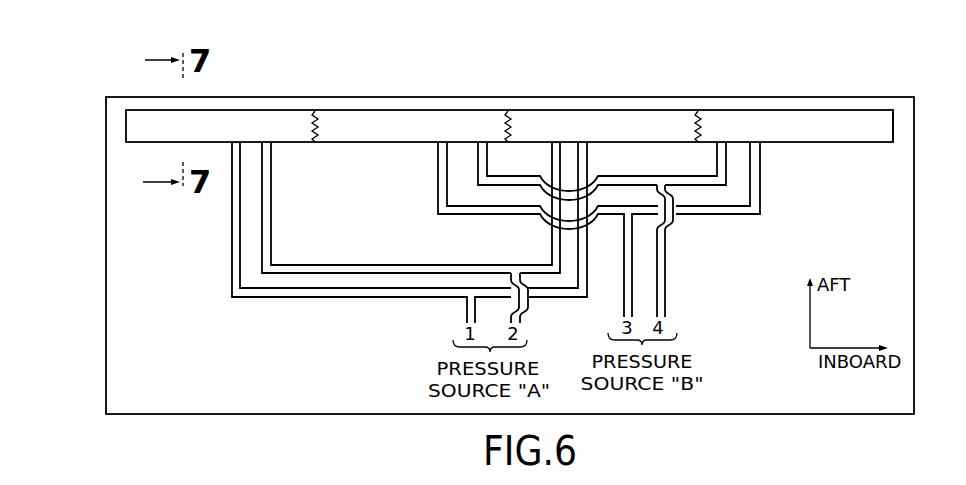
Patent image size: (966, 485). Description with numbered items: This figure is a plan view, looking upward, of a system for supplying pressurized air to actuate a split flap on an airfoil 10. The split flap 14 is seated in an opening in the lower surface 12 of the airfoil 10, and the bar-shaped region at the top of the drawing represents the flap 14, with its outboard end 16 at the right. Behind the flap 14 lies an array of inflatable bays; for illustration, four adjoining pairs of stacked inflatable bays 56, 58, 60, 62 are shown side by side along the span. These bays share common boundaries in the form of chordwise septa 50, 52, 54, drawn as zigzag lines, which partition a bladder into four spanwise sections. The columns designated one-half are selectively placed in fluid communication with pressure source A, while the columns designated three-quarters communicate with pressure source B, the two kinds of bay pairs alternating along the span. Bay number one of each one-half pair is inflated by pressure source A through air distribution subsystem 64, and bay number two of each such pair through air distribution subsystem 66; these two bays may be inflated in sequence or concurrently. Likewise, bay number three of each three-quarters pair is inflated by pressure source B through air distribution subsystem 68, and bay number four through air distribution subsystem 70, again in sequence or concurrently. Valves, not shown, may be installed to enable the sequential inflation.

The airfoil 10 is at (423, 78).
The lower surface 12 is at (125, 307).
The split flap 14 is at (128, 117).
The duct end 16 is at (893, 143).
The chordwise septum 50 is at (313, 115).
The chordwise septum 52 is at (507, 115).
The chordwise septum 54 is at (698, 115).
The pair of stacked inflatable bays 56 is at (221, 111).
The pair of stacked inflatable bays 58 is at (348, 111).
The pair of stacked inflatable bays 60 is at (573, 111).
The pair of stacked inflatable bays 62 is at (753, 111).
The air distribution subsystem 64 is at (293, 298).
The air distribution subsystem 66 is at (390, 275).
The air distribution subsystem 68 is at (703, 216).
The air distribution subsystem 70 is at (713, 188).